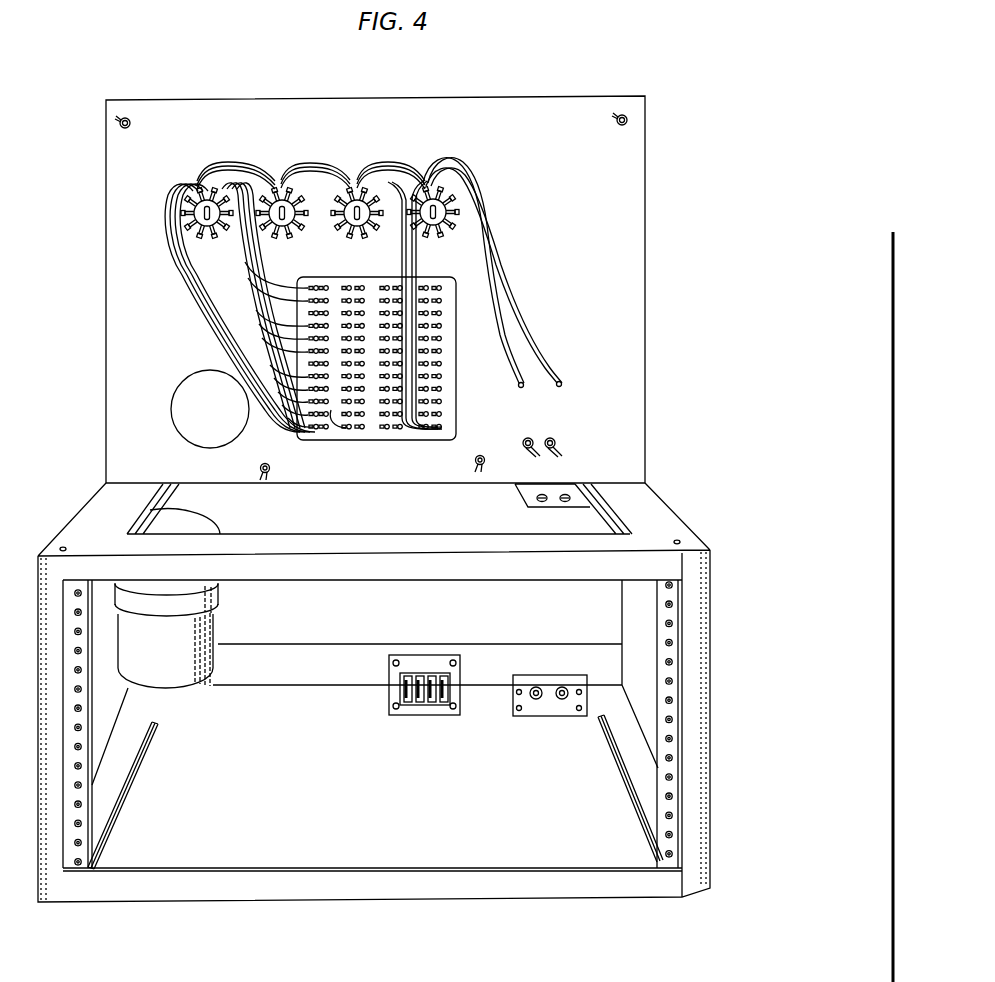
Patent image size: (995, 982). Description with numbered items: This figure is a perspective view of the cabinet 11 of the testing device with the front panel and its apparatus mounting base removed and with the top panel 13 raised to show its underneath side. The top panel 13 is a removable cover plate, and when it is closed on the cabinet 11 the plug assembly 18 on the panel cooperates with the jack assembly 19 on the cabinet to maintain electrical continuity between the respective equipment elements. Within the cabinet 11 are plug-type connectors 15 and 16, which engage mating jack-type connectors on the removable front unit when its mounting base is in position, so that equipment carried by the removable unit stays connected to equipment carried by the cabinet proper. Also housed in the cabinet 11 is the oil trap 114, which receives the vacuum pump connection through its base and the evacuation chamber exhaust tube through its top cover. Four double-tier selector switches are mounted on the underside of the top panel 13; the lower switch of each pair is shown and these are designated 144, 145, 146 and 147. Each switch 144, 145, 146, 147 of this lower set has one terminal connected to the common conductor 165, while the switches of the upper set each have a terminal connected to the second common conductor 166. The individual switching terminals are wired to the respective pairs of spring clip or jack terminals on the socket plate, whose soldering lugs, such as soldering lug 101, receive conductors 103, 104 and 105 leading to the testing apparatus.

The cabinet 11 is at (49, 895).
The top panel 13 is at (630, 221).
The plug-type connector 15 is at (432, 720).
The plug-type connector 16 is at (557, 716).
The plug assembly 18 is at (536, 440).
The jack assembly 19 is at (548, 500).
The soldering lug 101 is at (312, 432).
The conductor 103 is at (230, 332).
The conductor 104 is at (212, 332).
The conductor 105 is at (333, 413).
The oil trap 114 is at (220, 629).
The selector switch 144 is at (215, 238).
The selector switch 145 is at (290, 238).
The selector switch 146 is at (366, 238).
The selector switch 147 is at (440, 238).
The conductor 165 is at (504, 340).
The conductor 166 is at (540, 339).